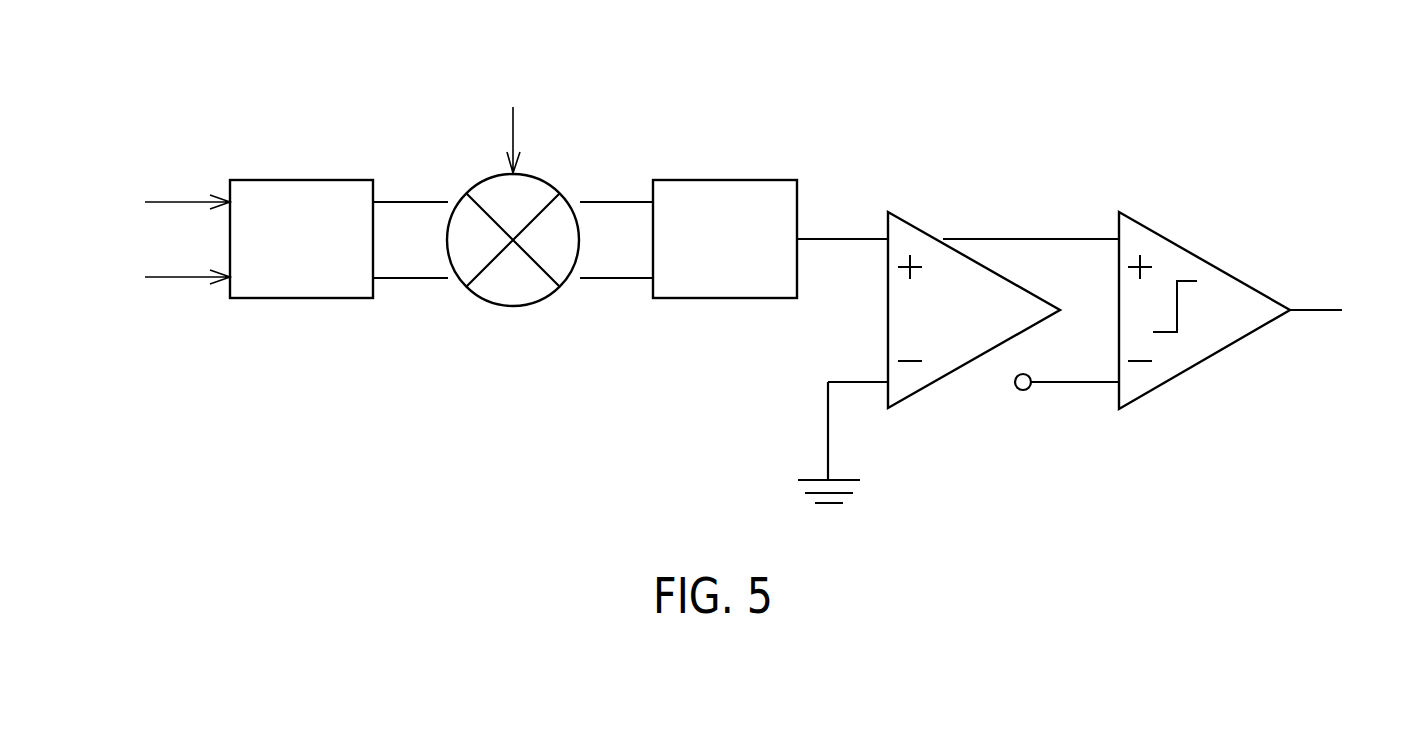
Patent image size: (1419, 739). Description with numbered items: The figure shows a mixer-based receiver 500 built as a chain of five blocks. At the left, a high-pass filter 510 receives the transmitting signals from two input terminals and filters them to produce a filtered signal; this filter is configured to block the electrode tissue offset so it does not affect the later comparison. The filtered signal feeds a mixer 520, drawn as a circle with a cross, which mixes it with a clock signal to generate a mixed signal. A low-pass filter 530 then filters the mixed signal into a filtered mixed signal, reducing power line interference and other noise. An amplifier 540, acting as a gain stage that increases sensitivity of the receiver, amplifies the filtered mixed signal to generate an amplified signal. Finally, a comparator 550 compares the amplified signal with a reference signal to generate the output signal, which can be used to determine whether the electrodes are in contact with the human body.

The mixer-based receiver 500 is at (1167, 88).
The high-pass filter 510 is at (330, 177).
The mixer 520 is at (553, 183).
The low-pass filter 530 is at (752, 177).
The amplifier 540 is at (913, 220).
The comparator 550 is at (1165, 235).